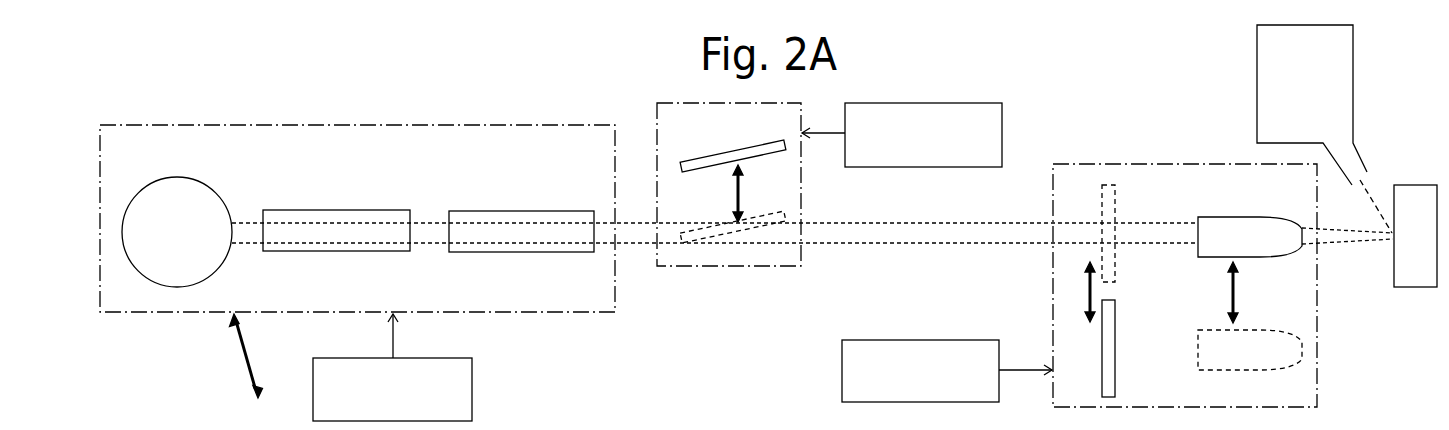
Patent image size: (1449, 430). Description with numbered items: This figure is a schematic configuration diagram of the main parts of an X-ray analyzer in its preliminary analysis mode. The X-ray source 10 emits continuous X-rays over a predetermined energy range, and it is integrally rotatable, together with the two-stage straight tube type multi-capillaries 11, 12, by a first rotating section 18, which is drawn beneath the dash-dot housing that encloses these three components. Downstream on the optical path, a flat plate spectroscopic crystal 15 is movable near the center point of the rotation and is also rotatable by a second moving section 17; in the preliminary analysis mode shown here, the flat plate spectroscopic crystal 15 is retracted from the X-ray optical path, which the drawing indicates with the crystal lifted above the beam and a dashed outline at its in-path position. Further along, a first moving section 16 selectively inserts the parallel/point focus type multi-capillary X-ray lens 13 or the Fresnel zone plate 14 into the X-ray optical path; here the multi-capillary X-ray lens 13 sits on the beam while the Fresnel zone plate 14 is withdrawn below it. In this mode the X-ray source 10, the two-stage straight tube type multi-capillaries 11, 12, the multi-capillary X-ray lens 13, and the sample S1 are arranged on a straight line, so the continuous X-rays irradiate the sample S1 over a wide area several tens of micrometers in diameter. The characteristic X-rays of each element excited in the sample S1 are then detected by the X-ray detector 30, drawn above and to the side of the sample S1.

The X-ray source 10 is at (155, 192).
The two-stage straight tube type multi-capillary 11 is at (308, 210).
The two-stage straight tube type multi-capillary 12 is at (500, 211).
The parallel/point focus type multi-capillary X-ray lens 13 is at (1215, 216).
The Fresnel zone plate 14 is at (1117, 363).
The flat plate spectroscopic crystal 15 is at (707, 155).
The first moving section 16 is at (842, 356).
The second moving section 17 is at (1002, 107).
The first rotating section 18 is at (473, 372).
The X-ray detector 30 is at (1257, 57).
The sample S1 is at (1412, 184).